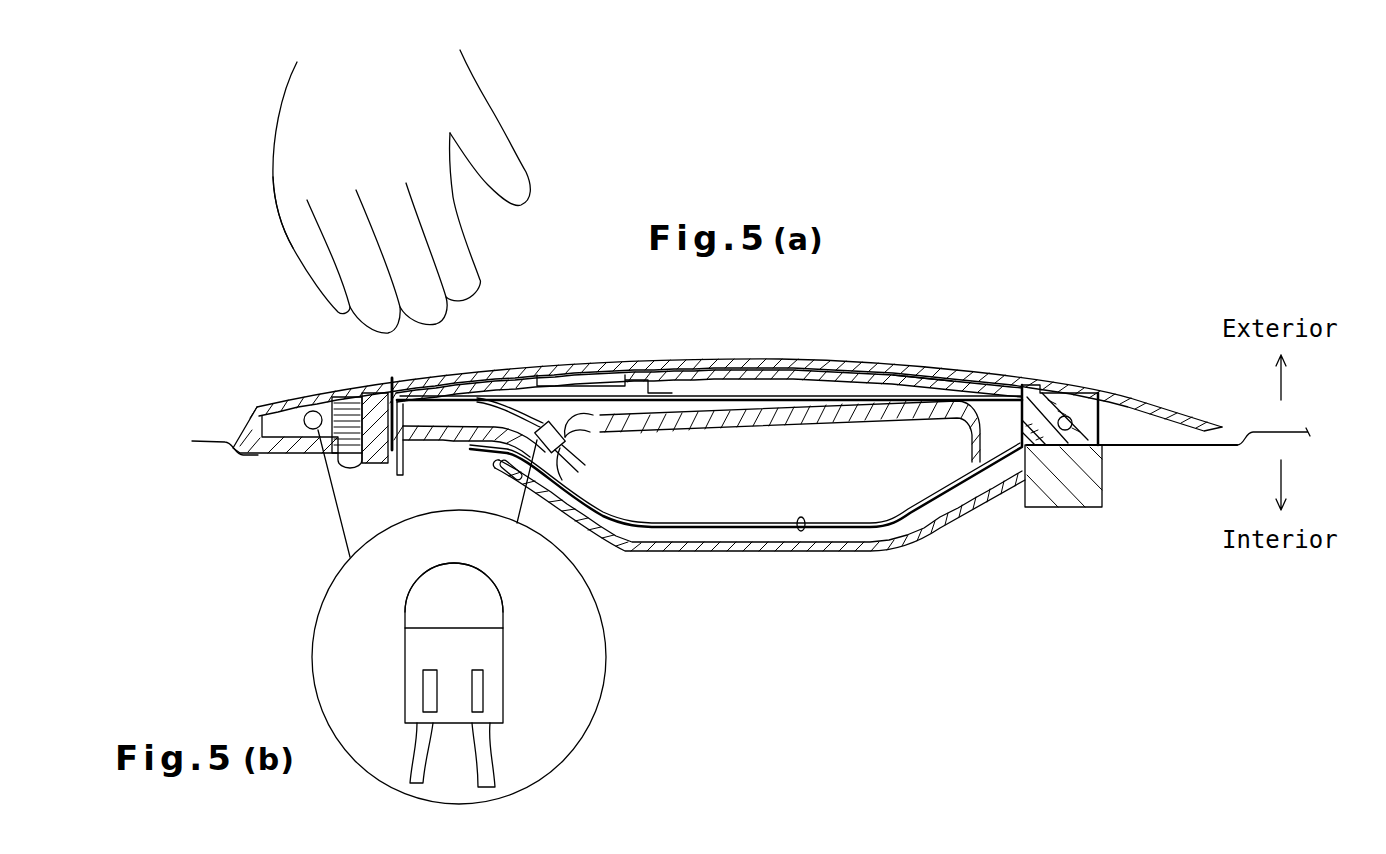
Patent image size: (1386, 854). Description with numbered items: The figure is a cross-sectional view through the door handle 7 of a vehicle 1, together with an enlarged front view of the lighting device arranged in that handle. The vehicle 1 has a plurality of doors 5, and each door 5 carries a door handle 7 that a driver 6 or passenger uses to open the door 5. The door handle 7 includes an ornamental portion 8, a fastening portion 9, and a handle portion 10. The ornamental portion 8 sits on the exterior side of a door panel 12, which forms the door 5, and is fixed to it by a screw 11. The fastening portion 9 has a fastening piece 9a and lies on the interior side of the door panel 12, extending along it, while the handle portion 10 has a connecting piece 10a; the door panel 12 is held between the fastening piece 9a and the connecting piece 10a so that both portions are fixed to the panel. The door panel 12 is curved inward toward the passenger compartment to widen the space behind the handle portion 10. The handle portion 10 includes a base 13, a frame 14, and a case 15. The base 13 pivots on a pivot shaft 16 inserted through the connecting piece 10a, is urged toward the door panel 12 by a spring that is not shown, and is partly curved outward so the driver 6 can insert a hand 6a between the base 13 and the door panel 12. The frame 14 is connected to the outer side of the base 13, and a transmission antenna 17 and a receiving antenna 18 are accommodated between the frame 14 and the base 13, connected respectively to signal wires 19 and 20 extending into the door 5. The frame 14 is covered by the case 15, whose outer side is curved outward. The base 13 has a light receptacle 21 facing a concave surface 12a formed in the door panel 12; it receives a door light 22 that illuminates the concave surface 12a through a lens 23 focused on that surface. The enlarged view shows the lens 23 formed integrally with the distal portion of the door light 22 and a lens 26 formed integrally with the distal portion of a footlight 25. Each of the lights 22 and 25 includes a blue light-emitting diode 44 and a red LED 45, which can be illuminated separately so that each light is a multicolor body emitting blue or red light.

In FIG. 5A, the vehicle 1 is at (906, 236).
In FIG. 5A, the door 5 is at (757, 684).
In FIG. 5A, the driver 6 is at (255, 110).
In FIG. 5A, the hand 6a is at (280, 183).
In FIG. 5A, the door handle 7 is at (965, 363).
In FIG. 5A, the ornamental portion 8 is at (312, 407).
In FIG. 5A, the fastening portion 9 is at (737, 547).
In FIG. 5A, the fastening piece 9a is at (1057, 507).
In FIG. 5A, the handle portion 10 is at (810, 360).
In FIG. 5A, the connecting piece 10a is at (1103, 439).
In FIG. 5A, the screw 11 is at (350, 469).
In FIG. 5A, the door panel 12 is at (660, 523).
In FIG. 5A, the concave surface 12a is at (801, 531).
In FIG. 5A, the base 13 is at (762, 410).
In FIG. 5A, the frame 14 is at (860, 370).
In FIG. 5A, the case 15 is at (907, 363).
In FIG. 5A, the pivot shaft 16 is at (1070, 418).
In FIG. 5A, the transmission antenna 17 is at (790, 431).
In FIG. 5A, the receiving antenna 18 is at (838, 401).
In FIG. 5A, the signal wire 19 is at (646, 356).
In FIG. 5A, the signal wire 20 is at (683, 374).
In FIG. 5A, the light receptacle 21 is at (562, 447).
In FIG. 5A, the door light 22 is at (550, 420).
In FIG. 5B, the door light 22 is at (346, 675).
In FIG. 5A, the lens 23 is at (565, 443).
In FIG. 5B, the lens 23 is at (486, 598).
In FIG. 5A, the footlight 25 is at (332, 400).
In FIG. 5B, the footlight 25 is at (360, 638).
In FIG. 5B, the lens 26 is at (495, 592).
In FIG. 5B, the blue light-emitting diode 44 is at (428, 690).
In FIG. 5B, the red LED 45 is at (482, 690).